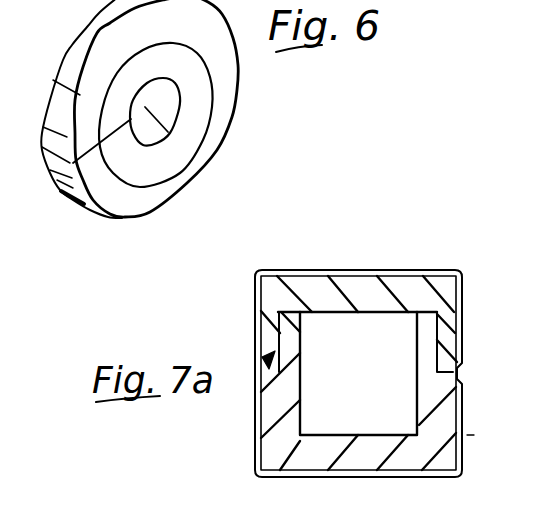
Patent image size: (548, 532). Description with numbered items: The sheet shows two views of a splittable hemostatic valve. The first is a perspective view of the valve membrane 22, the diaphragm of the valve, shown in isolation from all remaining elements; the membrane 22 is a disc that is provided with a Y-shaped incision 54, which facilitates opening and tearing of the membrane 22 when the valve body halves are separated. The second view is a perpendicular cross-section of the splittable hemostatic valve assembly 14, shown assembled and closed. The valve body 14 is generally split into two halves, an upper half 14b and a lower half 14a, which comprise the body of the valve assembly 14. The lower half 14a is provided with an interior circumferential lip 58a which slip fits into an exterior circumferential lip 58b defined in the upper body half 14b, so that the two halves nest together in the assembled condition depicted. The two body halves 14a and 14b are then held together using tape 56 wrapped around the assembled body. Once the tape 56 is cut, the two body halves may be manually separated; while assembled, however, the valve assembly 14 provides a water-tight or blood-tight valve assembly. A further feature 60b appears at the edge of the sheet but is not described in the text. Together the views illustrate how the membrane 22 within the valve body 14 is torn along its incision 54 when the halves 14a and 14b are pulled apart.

In FIG. 6, the valve membrane 22 is at (222, 108).
In FIG. 6, the Y-shaped incision 54 is at (131, 119).
In FIG. 7A, the splittable hemostatic valve assembly 14 is at (251, 492).
In FIG. 7A, the lower half 14a is at (357, 458).
In FIG. 7A, the upper half 14b is at (355, 287).
In FIG. 7A, the tape 56 is at (263, 329).
In FIG. 7A, the interior circumferential lip 58a is at (432, 332).
In FIG. 7A, the exterior circumferential lip 58b is at (273, 354).
In FIG. 7A, the tab 60b is at (106, 521).